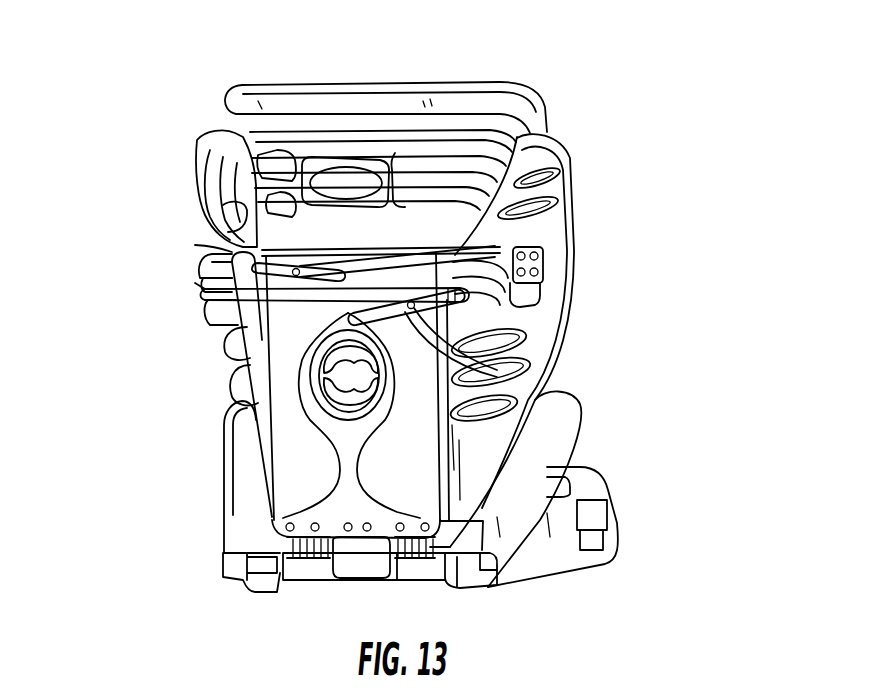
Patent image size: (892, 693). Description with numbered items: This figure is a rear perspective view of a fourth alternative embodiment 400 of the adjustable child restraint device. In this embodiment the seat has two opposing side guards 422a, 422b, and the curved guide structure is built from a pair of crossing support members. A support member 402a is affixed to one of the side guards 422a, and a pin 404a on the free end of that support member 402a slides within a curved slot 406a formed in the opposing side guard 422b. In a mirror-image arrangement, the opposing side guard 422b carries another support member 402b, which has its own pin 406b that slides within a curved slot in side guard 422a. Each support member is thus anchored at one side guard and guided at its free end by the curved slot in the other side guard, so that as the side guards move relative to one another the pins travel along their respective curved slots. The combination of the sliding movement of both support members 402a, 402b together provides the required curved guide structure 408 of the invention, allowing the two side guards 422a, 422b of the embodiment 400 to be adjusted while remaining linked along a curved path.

The embodiment 400 is at (612, 119).
The support member 402a is at (398, 263).
The support member 402b is at (274, 293).
The pin 404a is at (299, 268).
The curved slot 406a is at (208, 262).
The pin 406b is at (497, 377).
The curved guide structure 408 is at (190, 262).
The side guard 422a is at (463, 255).
The side guard 422b is at (226, 350).